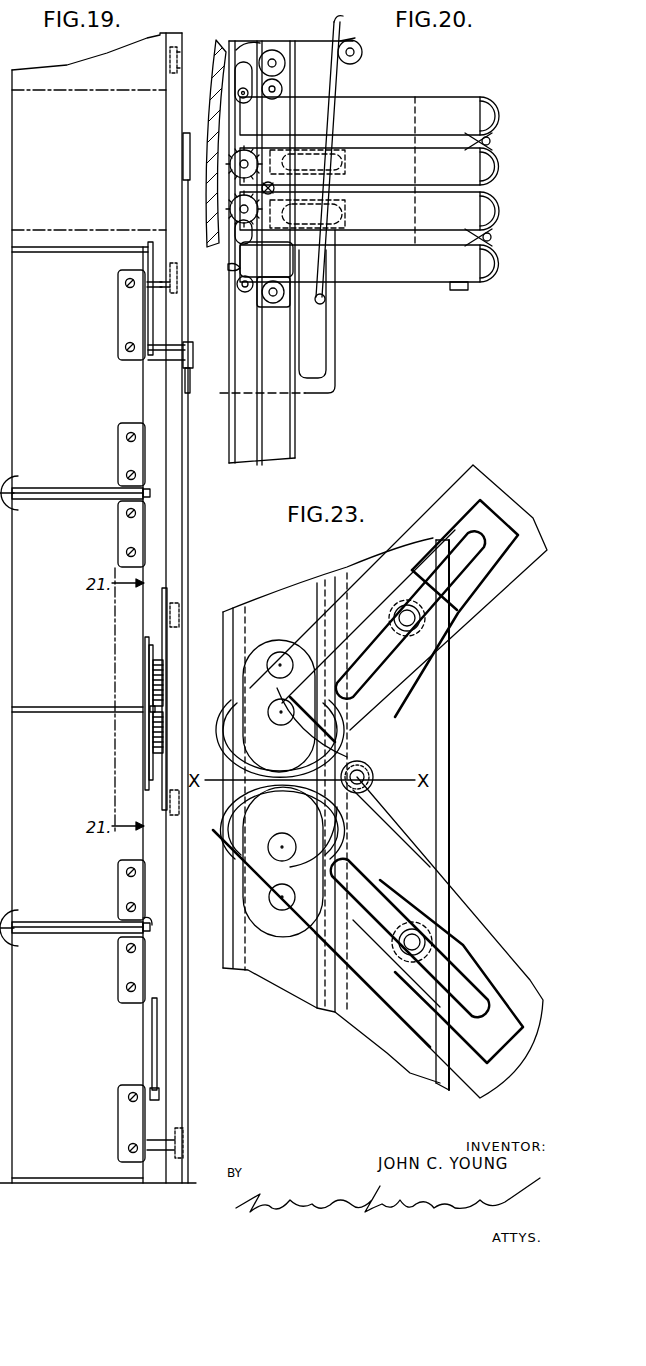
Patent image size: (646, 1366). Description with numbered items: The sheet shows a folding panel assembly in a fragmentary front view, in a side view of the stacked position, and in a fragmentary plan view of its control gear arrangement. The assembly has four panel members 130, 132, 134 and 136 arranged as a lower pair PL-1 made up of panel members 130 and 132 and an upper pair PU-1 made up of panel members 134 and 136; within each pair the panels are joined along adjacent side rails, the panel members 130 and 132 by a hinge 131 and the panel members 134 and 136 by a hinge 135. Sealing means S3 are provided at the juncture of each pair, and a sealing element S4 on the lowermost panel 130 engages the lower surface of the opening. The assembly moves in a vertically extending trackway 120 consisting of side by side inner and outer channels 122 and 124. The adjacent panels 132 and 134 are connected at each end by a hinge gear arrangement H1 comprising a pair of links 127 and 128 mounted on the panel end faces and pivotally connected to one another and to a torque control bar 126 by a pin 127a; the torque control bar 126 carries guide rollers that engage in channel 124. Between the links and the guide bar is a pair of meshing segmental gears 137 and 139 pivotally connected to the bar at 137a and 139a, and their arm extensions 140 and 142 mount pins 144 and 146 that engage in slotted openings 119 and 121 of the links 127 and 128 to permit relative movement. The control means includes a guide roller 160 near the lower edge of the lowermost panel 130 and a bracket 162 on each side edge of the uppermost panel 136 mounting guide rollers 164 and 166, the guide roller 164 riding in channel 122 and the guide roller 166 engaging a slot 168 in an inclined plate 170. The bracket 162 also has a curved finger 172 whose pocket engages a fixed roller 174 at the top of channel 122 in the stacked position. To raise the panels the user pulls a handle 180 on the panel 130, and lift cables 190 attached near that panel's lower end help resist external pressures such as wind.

In FIG. 23, the slotted opening 119 is at (470, 992).
In FIG. 19, the trackway 120 is at (236, 537).
In FIG. 20, the trackway 120 is at (349, 451).
In FIG. 23, the trackway 120 is at (451, 781).
In FIG. 23, the slotted opening 121 is at (475, 535).
In FIG. 20, the inner channel 122 is at (287, 423).
In FIG. 23, the inner channel 122 is at (436, 696).
In FIG. 19, the outer channel 124 is at (182, 440).
In FIG. 20, the outer channel 124 is at (237, 427).
In FIG. 23, the outer channel 124 is at (330, 588).
In FIG. 19, the torque control bar 126 is at (168, 590).
In FIG. 20, the torque control bar 126 is at (238, 78).
In FIG. 23, the torque control bar 126 is at (282, 970).
In FIG. 19, the link 127 is at (148, 733).
In FIG. 23, the link 127 is at (395, 856).
In FIG. 23, the pin 127a is at (373, 779).
In FIG. 19, the link 128 is at (147, 650).
In FIG. 23, the link 128 is at (458, 597).
In FIG. 19, the panel member 130 is at (78, 1060).
In FIG. 20, the panel member 130 is at (405, 263).
In FIG. 19, the hinge 131 is at (150, 923).
In FIG. 20, the hinge 131 is at (493, 238).
In FIG. 19, the panel member 132 is at (68, 814).
In FIG. 20, the panel member 132 is at (465, 217).
In FIG. 23, the panel member 132 is at (388, 1052).
In FIG. 19, the panel member 134 is at (76, 562).
In FIG. 20, the panel member 134 is at (468, 173).
In FIG. 23, the panel member 134 is at (433, 507).
In FIG. 19, the hinge 135 is at (150, 498).
In FIG. 20, the hinge 135 is at (490, 140).
In FIG. 19, the panel member 136 is at (80, 382).
In FIG. 20, the panel member 136 is at (420, 88).
In FIG. 19, the segmental gear 137 is at (160, 673).
In FIG. 20, the segmental gear 137 is at (264, 195).
In FIG. 23, the segmental gear 137 is at (222, 742).
In FIG. 23, the pivot connection 137a is at (282, 726).
In FIG. 19, the segmental gear 139 is at (150, 746).
In FIG. 20, the segmental gear 139 is at (337, 194).
In FIG. 23, the segmental gear 139 is at (228, 815).
In FIG. 23, the pivot connection 139a is at (282, 834).
In FIG. 23, the arm extension 140 is at (352, 633).
In FIG. 23, the arm extension 142 is at (454, 947).
In FIG. 23, the pin 144 is at (412, 620).
In FIG. 23, the pin 146 is at (410, 948).
In FIG. 19, the guide roller 160 is at (186, 1135).
In FIG. 20, the guide roller 160 is at (340, 293).
In FIG. 19, the bracket 162 is at (147, 258).
In FIG. 20, the bracket 162 is at (332, 28).
In FIG. 19, the guide roller 164 is at (173, 260).
In FIG. 20, the guide roller 164 is at (285, 90).
In FIG. 19, the guide roller 166 is at (180, 362).
In FIG. 20, the guide roller 166 is at (355, 56).
In FIG. 20, the slot 168 is at (326, 347).
In FIG. 19, the plate 170 is at (186, 187).
In FIG. 20, the plate 170 is at (400, 384).
In FIG. 20, the curved finger 172 is at (258, 41).
In FIG. 19, the fixed roller 174 is at (168, 61).
In FIG. 20, the fixed roller 174 is at (282, 62).
In FIG. 20, the handle 180 is at (456, 290).
In FIG. 19, the lift cable 190 is at (157, 1072).
In FIG. 20, the lift cable 190 is at (326, 244).
In FIG. 19, the sealing means S3 is at (72, 498).
In FIG. 20, the sealing means S3 is at (488, 100).
In FIG. 23, the sealing means S3 is at (215, 885).
In FIG. 19, the sealing element S4 is at (88, 1185).
In FIG. 20, the sealing element S4 is at (240, 266).
In FIG. 19, the hinge gear arrangement H1 is at (150, 697).
In FIG. 20, the hinge gear arrangement H1 is at (215, 284).
In FIG. 23, the hinge gear arrangement H1 is at (232, 773).
In FIG. 20, the upper pair PU-1 is at (477, 118).
In FIG. 20, the lower pair PL-1 is at (432, 222).